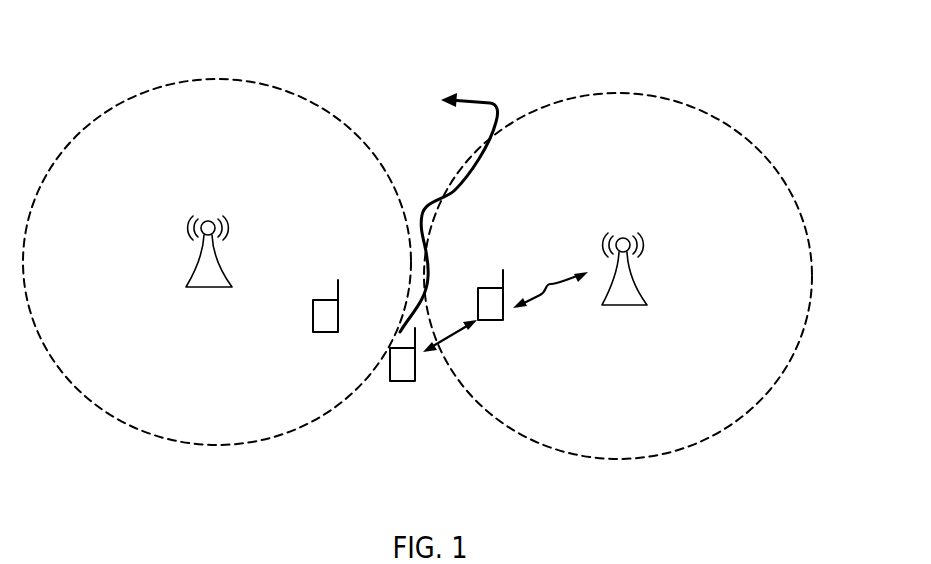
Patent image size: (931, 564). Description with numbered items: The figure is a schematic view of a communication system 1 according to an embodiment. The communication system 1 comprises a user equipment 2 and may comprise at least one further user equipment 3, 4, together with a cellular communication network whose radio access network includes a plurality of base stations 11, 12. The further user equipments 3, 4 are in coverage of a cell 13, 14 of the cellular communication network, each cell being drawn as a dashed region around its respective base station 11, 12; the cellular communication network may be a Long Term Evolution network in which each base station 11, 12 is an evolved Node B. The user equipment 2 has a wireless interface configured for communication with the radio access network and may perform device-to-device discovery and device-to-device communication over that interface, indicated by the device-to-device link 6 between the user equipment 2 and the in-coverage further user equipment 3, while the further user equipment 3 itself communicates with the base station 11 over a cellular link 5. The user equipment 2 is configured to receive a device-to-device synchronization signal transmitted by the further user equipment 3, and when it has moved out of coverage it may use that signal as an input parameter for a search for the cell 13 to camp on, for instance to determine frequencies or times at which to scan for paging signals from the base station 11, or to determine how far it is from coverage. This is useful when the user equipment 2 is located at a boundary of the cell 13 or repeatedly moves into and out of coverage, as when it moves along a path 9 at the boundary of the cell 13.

The communication system 1 is at (96, 55).
The user equipment 2 is at (390, 381).
The further user equipment 3 is at (478, 320).
The further user equipment 4 is at (313, 332).
The cellular communication link 5 is at (572, 280).
The device-to-device communication link 6 is at (441, 342).
The path 9 is at (492, 104).
The base station 11 is at (647, 305).
The base station 12 is at (232, 287).
The cell 13 is at (772, 163).
The cell 14 is at (350, 130).